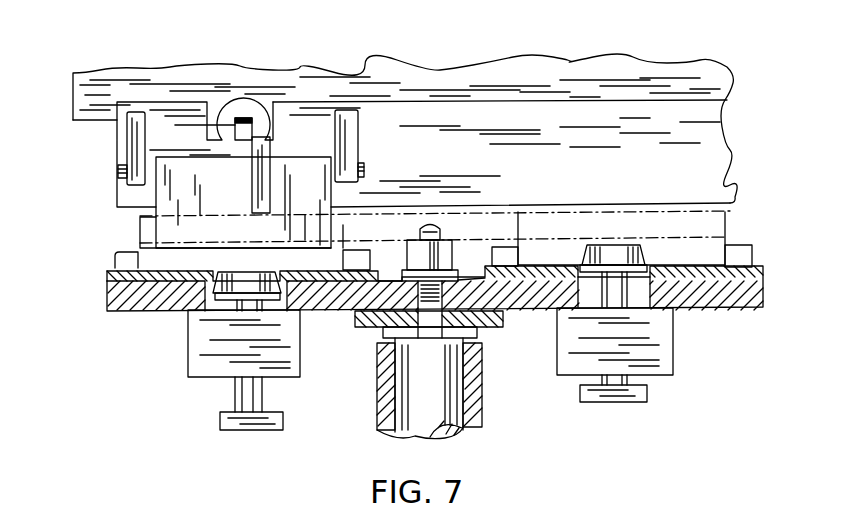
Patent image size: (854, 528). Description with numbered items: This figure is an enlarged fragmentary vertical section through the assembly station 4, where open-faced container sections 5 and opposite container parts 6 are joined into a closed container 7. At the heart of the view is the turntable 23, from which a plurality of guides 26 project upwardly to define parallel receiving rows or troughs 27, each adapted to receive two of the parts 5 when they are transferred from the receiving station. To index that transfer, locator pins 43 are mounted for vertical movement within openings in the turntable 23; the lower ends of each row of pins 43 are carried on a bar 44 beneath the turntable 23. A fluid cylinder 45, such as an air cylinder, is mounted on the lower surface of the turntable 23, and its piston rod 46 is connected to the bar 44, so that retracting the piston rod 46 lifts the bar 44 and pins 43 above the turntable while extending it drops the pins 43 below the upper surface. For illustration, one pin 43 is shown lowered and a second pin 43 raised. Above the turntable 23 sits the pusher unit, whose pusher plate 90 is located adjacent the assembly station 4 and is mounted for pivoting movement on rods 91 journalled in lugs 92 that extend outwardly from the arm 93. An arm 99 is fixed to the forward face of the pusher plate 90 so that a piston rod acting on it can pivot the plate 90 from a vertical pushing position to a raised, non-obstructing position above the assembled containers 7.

The assembly station 4 is at (742, 81).
The arm 93 is at (680, 134).
The pusher plate 90 is at (292, 165).
The lugs 92 is at (128, 135).
The rods 91 is at (117, 173).
The arm 99 is at (260, 188).
The closed container 7 is at (293, 214).
The opposite container parts 6 is at (338, 225).
The open-faced container sections 5 is at (340, 248).
The receiving rows or troughs 27 is at (140, 262).
The guides 26 is at (115, 258).
The locator pins 43 is at (247, 272).
The turntable 23 is at (755, 296).
The fluid cylinder 45 is at (198, 333).
The piston rod 46 is at (235, 388).
The bar 44 is at (233, 423).